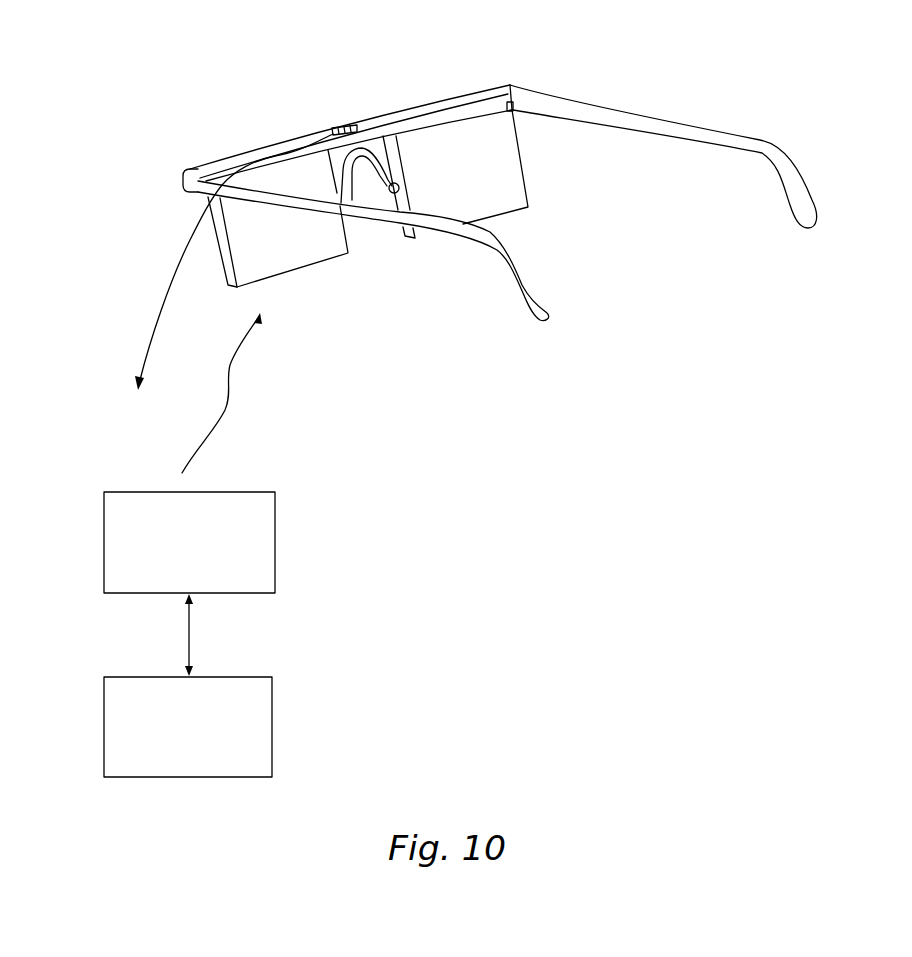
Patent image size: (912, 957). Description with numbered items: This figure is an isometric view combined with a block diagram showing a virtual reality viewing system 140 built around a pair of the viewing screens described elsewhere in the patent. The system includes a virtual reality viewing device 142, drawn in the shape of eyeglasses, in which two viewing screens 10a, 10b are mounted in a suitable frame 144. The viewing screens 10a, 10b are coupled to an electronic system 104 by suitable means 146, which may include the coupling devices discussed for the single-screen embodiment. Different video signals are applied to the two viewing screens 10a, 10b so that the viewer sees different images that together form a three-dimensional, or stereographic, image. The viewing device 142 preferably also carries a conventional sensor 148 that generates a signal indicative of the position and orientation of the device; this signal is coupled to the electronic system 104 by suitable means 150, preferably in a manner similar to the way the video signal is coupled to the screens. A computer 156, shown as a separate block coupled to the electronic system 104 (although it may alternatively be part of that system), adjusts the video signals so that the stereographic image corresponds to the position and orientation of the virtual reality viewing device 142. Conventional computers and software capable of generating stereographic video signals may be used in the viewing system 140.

The virtual reality viewing system 140 is at (259, 76).
The virtual reality viewing device 142 is at (394, 94).
The frame 144 is at (272, 152).
The sensor 148 is at (333, 128).
The means 150 is at (177, 257).
The means 146 is at (229, 374).
The electronic system 104 is at (104, 540).
The computer 156 is at (104, 714).
The viewing screen 10a is at (290, 248).
The viewing screen 10b is at (484, 192).